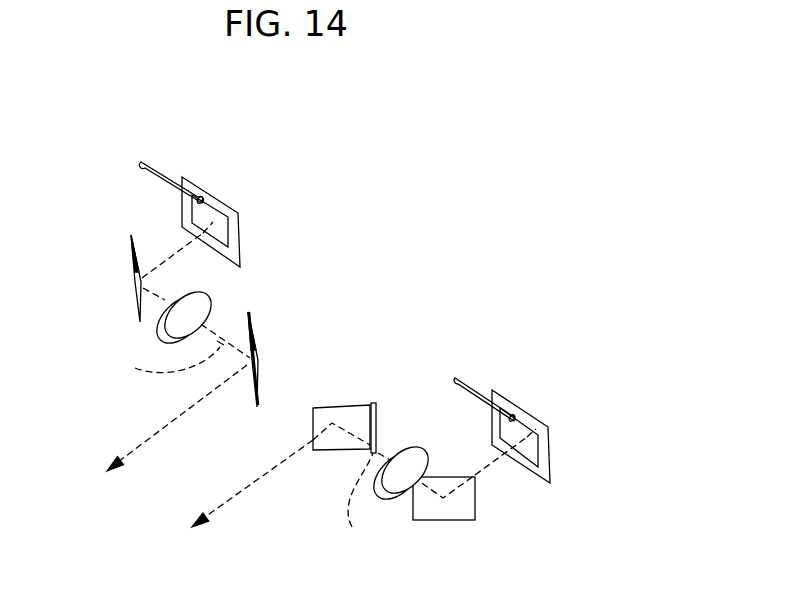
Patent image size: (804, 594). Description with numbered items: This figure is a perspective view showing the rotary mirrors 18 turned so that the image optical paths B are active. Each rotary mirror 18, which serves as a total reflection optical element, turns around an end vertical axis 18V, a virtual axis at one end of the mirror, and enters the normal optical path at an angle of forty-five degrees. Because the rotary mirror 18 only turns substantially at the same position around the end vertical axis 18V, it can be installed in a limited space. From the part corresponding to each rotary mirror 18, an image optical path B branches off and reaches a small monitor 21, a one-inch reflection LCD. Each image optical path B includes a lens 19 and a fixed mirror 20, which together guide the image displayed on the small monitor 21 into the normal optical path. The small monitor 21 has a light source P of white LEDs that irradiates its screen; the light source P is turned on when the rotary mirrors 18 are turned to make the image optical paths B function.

The light source P is at (158, 155).
The small monitor 21 is at (215, 190).
The fixed mirror 20 is at (128, 258).
The lens 19 is at (202, 288).
The rotary mirror 18 is at (258, 390).
The end vertical axis 18V is at (250, 312).
The image optical path B is at (242, 449).